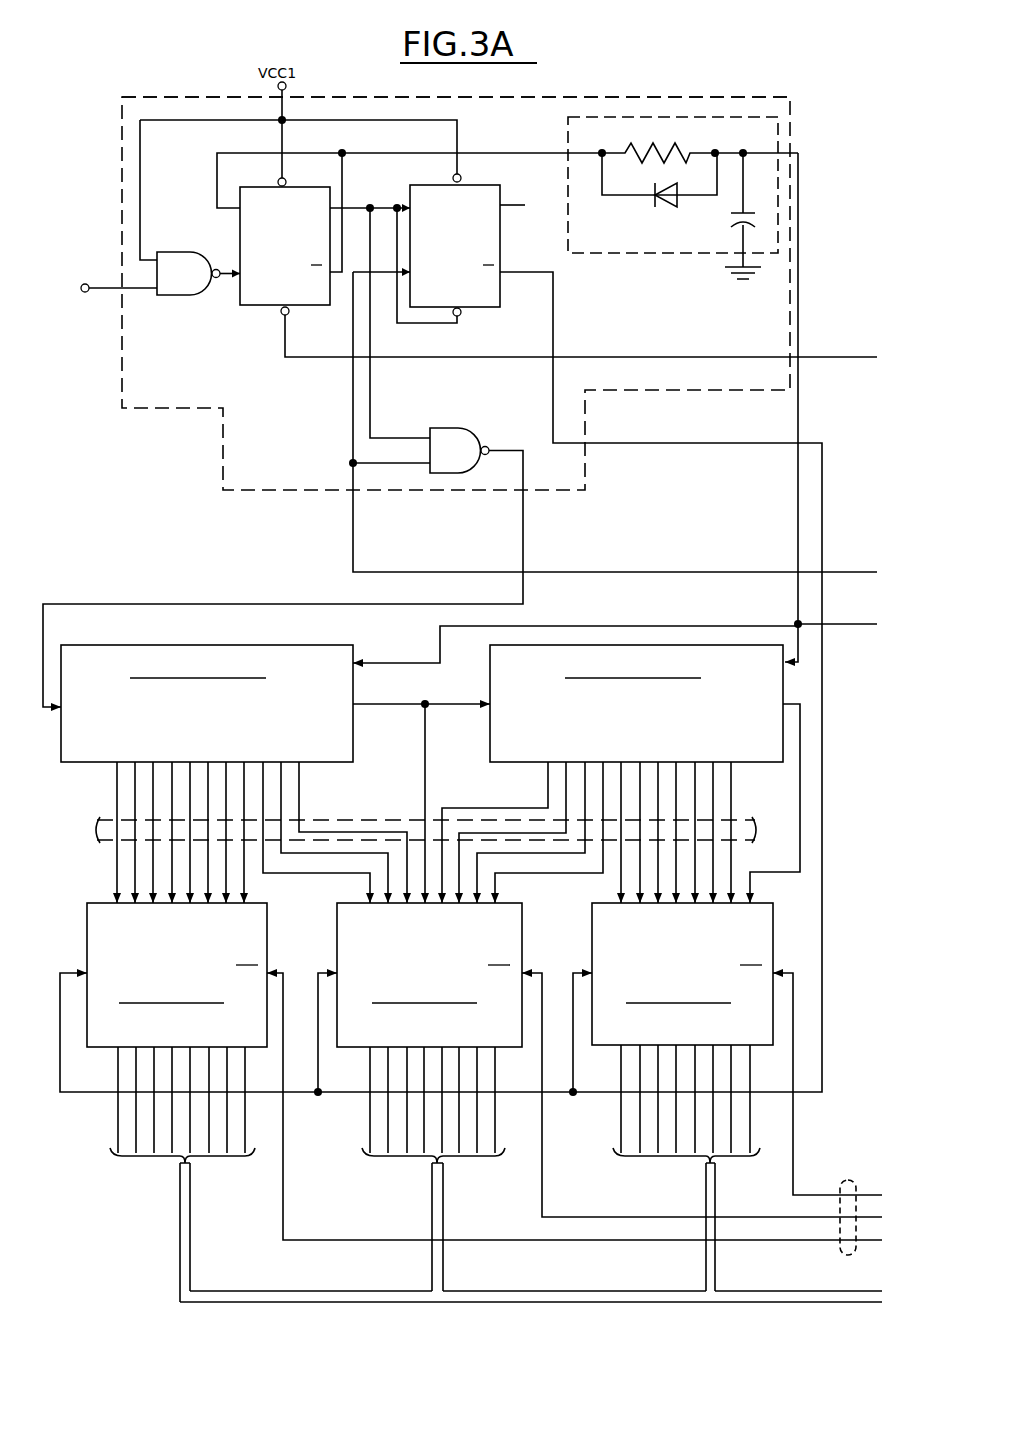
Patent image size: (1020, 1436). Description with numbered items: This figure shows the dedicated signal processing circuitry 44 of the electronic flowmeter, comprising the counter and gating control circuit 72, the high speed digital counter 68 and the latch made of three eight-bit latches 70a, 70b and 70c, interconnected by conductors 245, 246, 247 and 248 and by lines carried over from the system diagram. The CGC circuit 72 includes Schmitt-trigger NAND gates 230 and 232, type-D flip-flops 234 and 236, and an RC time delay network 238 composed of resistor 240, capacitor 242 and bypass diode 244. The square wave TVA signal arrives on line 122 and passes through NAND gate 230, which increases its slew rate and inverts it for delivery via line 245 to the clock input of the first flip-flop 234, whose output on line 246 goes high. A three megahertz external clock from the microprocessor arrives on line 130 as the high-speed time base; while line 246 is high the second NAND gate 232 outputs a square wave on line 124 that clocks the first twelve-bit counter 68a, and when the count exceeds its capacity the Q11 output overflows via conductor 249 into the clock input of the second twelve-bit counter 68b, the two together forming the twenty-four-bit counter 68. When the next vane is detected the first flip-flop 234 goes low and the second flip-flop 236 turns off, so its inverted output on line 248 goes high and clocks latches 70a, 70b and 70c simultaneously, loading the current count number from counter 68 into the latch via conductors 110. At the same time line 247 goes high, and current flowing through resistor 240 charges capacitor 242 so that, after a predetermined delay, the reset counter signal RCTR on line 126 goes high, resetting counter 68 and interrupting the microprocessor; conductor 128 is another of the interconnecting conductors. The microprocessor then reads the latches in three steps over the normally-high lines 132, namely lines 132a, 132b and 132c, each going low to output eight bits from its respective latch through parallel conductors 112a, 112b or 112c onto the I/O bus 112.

The signal processing circuitry 44 is at (760, 68).
The counter and gating control circuit 72 is at (792, 100).
The TVA signal line 122 is at (110, 290).
The counter clock signal line 124 is at (236, 604).
The reset counter signal line 126 is at (800, 214).
The conductor 128 is at (858, 322).
The 3 MHz external clock signal line 130 is at (842, 572).
The latch read lines 132 is at (574, 1116).
The first latch read line 132a is at (802, 1240).
The second latch read line 132b is at (778, 1217).
The third latch read line 132c is at (796, 1118).
The high speed digital counter 68 is at (462, 685).
The first 12-bit counter 68a is at (266, 645).
The second 12-bit counter 68b is at (650, 645).
The 8-bit latch 70a is at (86, 912).
The 8-bit latch 70b is at (337, 938).
The 8-bit latch 70c is at (592, 938).
The conductors 110 is at (92, 836).
The I/O bus 112 is at (485, 1173).
The parallel conductors 112a is at (182, 1164).
The parallel conductors 112b is at (434, 1164).
The parallel conductors 112c is at (708, 1164).
The Schmitt-trigger NAND gate 230 is at (196, 226).
The Schmitt-trigger NAND gate 232 is at (452, 428).
The type-D flip-flop 234 is at (217, 206).
The type-D flip-flop 236 is at (500, 238).
The RC time delay network 238 is at (560, 133).
The resistor 240 is at (648, 166).
The capacitor 242 is at (752, 226).
The bypass diode 244 is at (658, 202).
The line 245 is at (225, 282).
The line 246 is at (357, 206).
The line 247 is at (350, 153).
The line 248 is at (690, 443).
The conductor 249 is at (420, 746).